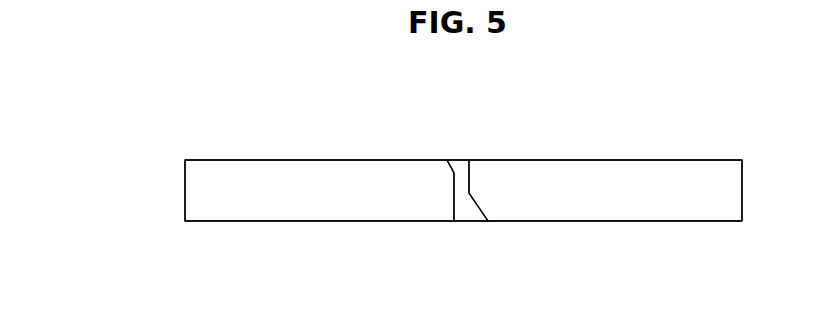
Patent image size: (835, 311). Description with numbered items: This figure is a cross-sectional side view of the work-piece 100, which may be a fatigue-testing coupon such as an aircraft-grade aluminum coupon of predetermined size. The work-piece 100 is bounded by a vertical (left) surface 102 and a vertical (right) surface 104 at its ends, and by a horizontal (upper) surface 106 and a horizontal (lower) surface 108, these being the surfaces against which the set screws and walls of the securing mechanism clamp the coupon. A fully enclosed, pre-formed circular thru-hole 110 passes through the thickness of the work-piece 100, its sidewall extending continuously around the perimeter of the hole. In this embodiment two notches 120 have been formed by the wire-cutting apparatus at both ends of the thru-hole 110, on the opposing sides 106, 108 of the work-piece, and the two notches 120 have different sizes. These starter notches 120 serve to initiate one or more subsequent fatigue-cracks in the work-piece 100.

The work-piece 100 is at (270, 122).
The vertical (left) surface 102 is at (185, 194).
The vertical (right) surface 104 is at (742, 191).
The horizontal (upper) surface 106 is at (570, 160).
The horizontal (lower) surface 108 is at (623, 221).
The thru-hole 110 is at (460, 192).
The notch 120 is at (462, 158).